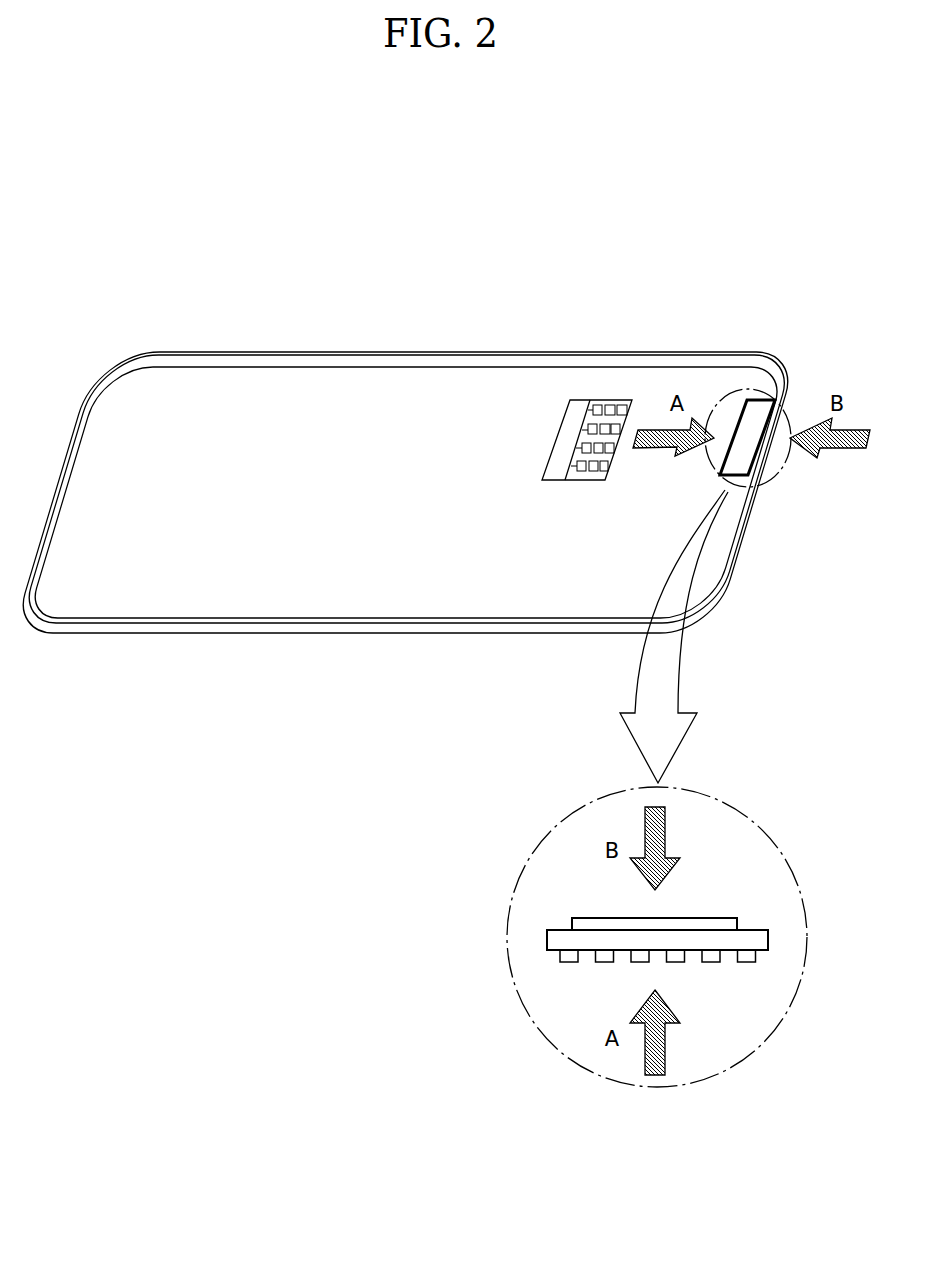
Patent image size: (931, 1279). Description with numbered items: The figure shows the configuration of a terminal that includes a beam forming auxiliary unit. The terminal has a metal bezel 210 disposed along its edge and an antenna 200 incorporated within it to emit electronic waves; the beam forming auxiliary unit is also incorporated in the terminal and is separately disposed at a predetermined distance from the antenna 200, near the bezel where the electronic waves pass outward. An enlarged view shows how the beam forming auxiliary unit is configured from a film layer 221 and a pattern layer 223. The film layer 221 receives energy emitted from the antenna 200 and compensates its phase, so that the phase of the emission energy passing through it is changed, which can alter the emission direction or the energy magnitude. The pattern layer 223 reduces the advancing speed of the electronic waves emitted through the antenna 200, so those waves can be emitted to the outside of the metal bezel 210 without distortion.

The antenna 200 is at (582, 397).
The metal bezel 210 is at (380, 352).
The film layer 221 is at (548, 940).
The pattern layer 223 is at (562, 957).